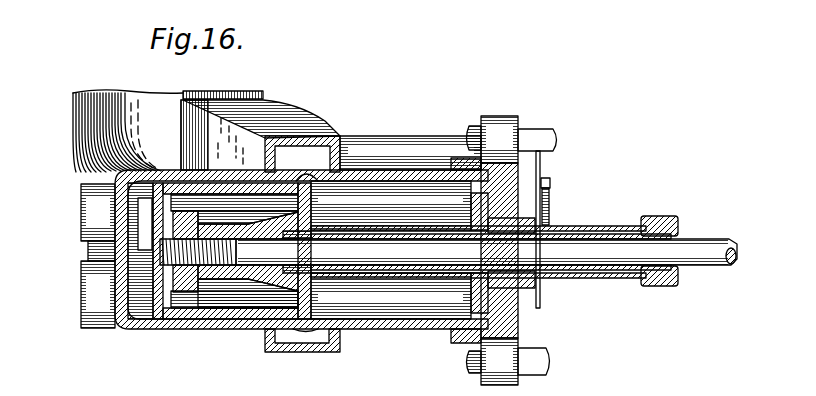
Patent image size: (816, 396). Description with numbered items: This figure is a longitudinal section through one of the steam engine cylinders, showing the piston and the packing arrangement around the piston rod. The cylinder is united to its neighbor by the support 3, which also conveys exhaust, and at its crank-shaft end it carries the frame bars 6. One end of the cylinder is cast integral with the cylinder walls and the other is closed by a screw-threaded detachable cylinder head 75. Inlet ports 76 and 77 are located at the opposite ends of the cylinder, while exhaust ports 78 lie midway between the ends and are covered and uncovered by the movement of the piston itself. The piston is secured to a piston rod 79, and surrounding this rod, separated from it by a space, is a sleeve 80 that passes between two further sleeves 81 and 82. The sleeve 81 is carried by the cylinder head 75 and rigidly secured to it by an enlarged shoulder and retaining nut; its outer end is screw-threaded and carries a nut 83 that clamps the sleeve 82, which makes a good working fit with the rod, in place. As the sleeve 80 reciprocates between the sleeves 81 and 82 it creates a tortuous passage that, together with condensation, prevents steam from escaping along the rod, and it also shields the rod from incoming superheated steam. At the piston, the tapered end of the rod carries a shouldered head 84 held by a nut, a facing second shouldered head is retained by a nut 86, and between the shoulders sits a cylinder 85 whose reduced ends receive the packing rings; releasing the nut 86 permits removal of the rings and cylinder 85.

The support 3 is at (282, 118).
The frame bars 6 is at (528, 358).
The cylinder head 75 is at (510, 177).
The inlet port 76 is at (138, 210).
The inlet port 77 is at (467, 208).
The exhaust ports 78 is at (298, 315).
The piston rod 79 is at (716, 234).
The sleeve 80 is at (393, 262).
The sleeve 81 is at (588, 220).
The sleeve 82 is at (615, 230).
The nut 83 is at (670, 213).
The shouldered head 84 is at (242, 275).
The cylinder 85 is at (207, 311).
The nut 86 is at (150, 257).